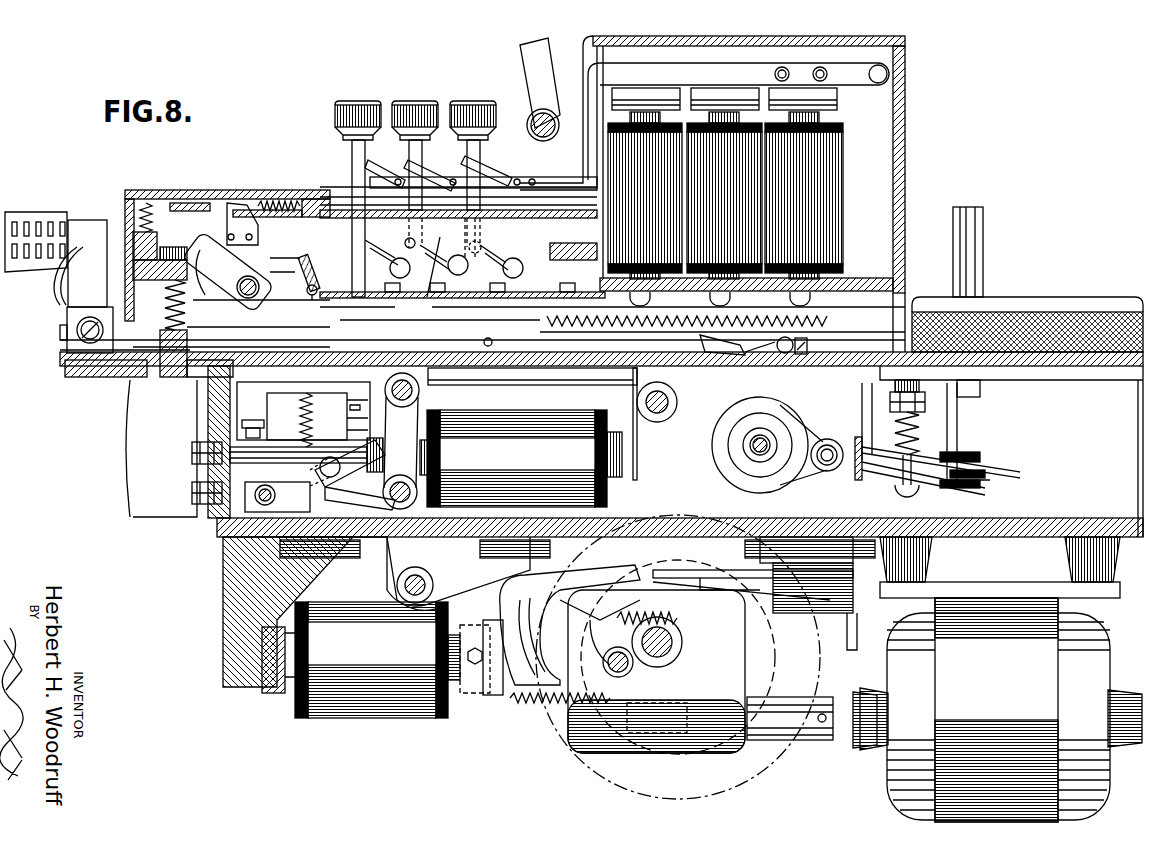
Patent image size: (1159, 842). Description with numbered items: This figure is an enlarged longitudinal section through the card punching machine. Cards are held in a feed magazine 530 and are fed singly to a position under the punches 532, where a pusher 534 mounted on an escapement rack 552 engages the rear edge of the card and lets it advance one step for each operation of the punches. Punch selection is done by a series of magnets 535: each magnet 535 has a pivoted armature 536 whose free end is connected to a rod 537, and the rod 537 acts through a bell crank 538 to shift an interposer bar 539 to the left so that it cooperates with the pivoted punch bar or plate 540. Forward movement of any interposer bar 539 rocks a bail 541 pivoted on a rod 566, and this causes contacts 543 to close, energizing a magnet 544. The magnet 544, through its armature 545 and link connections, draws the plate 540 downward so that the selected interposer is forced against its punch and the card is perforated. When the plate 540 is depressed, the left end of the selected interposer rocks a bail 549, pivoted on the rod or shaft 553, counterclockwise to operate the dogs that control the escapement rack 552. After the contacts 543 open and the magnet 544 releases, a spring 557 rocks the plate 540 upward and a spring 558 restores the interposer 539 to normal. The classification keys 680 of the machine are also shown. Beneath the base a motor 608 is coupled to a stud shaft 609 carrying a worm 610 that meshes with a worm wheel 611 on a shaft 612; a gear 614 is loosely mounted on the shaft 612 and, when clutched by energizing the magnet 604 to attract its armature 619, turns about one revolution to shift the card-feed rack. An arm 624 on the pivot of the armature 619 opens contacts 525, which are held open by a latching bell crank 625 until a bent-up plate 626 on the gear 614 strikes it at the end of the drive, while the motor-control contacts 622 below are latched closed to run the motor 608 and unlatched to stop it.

The contacts 525 is at (673, 583).
The feed magazine 530 is at (1033, 318).
The punches 532 is at (170, 268).
The pusher 534 is at (720, 350).
The magnets 535 is at (820, 160).
The pivoted armature 536 is at (703, 80).
The rod 537 is at (480, 193).
The bell crank 538 is at (548, 309).
The interposer bar 539 is at (335, 242).
The punch bar or plate 540 is at (180, 204).
The bail 541 is at (304, 266).
The contacts 543 is at (348, 407).
The magnet 544 is at (528, 437).
The armature 545 is at (400, 467).
The bail 549 is at (208, 255).
The escapement rack 552 is at (755, 348).
The rod or shaft 553 is at (189, 305).
The spring 557 is at (140, 210).
The spring 558 is at (277, 203).
The rod 566 is at (312, 295).
The magnet 604 is at (343, 617).
The motor 608 is at (888, 770).
The stud shaft 609 is at (760, 730).
The worm 610 is at (660, 735).
The worm wheel 611 is at (720, 662).
The shaft 612 is at (660, 657).
The gear 614 is at (543, 717).
The armature 619 is at (478, 683).
The motor-control contacts 622 is at (680, 609).
The arm 624 is at (490, 574).
The latching bell crank 625 is at (590, 667).
The bent-up plate 626 is at (513, 712).
The keys 680 is at (470, 116).